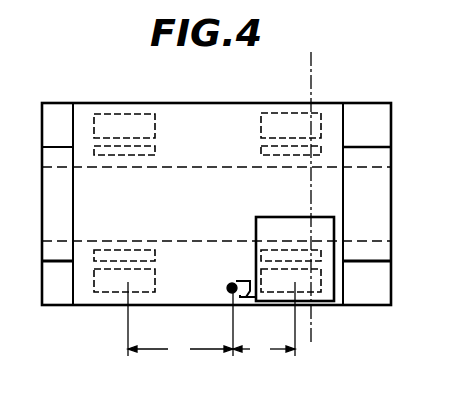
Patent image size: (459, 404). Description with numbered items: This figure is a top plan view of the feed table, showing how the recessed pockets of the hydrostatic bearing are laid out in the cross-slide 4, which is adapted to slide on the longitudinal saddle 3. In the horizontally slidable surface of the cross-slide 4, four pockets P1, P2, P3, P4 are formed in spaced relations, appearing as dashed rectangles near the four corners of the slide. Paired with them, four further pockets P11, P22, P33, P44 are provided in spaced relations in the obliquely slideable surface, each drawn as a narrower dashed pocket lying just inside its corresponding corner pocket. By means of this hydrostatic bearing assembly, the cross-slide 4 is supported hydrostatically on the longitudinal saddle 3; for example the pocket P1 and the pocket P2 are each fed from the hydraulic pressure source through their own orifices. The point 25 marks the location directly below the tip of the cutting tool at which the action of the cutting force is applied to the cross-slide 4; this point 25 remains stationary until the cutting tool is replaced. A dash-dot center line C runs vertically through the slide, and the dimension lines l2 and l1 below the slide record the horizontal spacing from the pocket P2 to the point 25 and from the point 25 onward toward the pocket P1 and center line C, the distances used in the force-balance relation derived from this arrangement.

The longitudinal saddle 3 is at (382, 121).
The cross-slide 4 is at (333, 116).
The point of action of cutting force 25 is at (229, 283).
The pocket P1 is at (319, 279).
The pocket P2 is at (108, 288).
The pocket P3 is at (121, 118).
The pocket P4 is at (272, 117).
The pocket P11 is at (262, 252).
The pocket P22 is at (143, 252).
The pocket P33 is at (113, 153).
The pocket P44 is at (277, 153).
The center line C is at (312, 195).
The distance l1 is at (264, 324).
The distance l2 is at (180, 324).